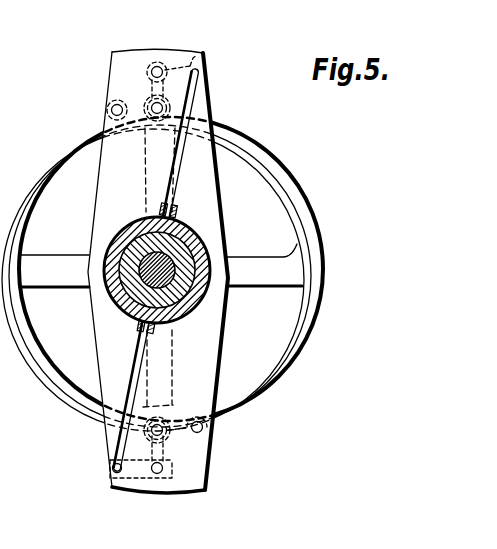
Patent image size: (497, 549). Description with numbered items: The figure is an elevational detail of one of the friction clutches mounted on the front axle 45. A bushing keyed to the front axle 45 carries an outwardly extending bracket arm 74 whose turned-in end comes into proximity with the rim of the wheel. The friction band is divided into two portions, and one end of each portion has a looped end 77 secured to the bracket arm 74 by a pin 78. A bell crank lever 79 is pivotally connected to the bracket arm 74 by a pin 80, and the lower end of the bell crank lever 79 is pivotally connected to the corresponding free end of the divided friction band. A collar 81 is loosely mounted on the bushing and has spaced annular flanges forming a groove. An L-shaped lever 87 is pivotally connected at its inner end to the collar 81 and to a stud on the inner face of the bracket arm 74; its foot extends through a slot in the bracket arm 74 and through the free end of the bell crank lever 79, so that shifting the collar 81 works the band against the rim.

The bracket arm 74 is at (204, 178).
The L-shaped lever 87 is at (198, 102).
The pin 80 is at (157, 63).
The bell crank lever 79 is at (193, 57).
The collar 81 is at (205, 251).
The front axle 45 is at (130, 307).
The pin 78 is at (208, 429).
The looped end 77 is at (207, 445).